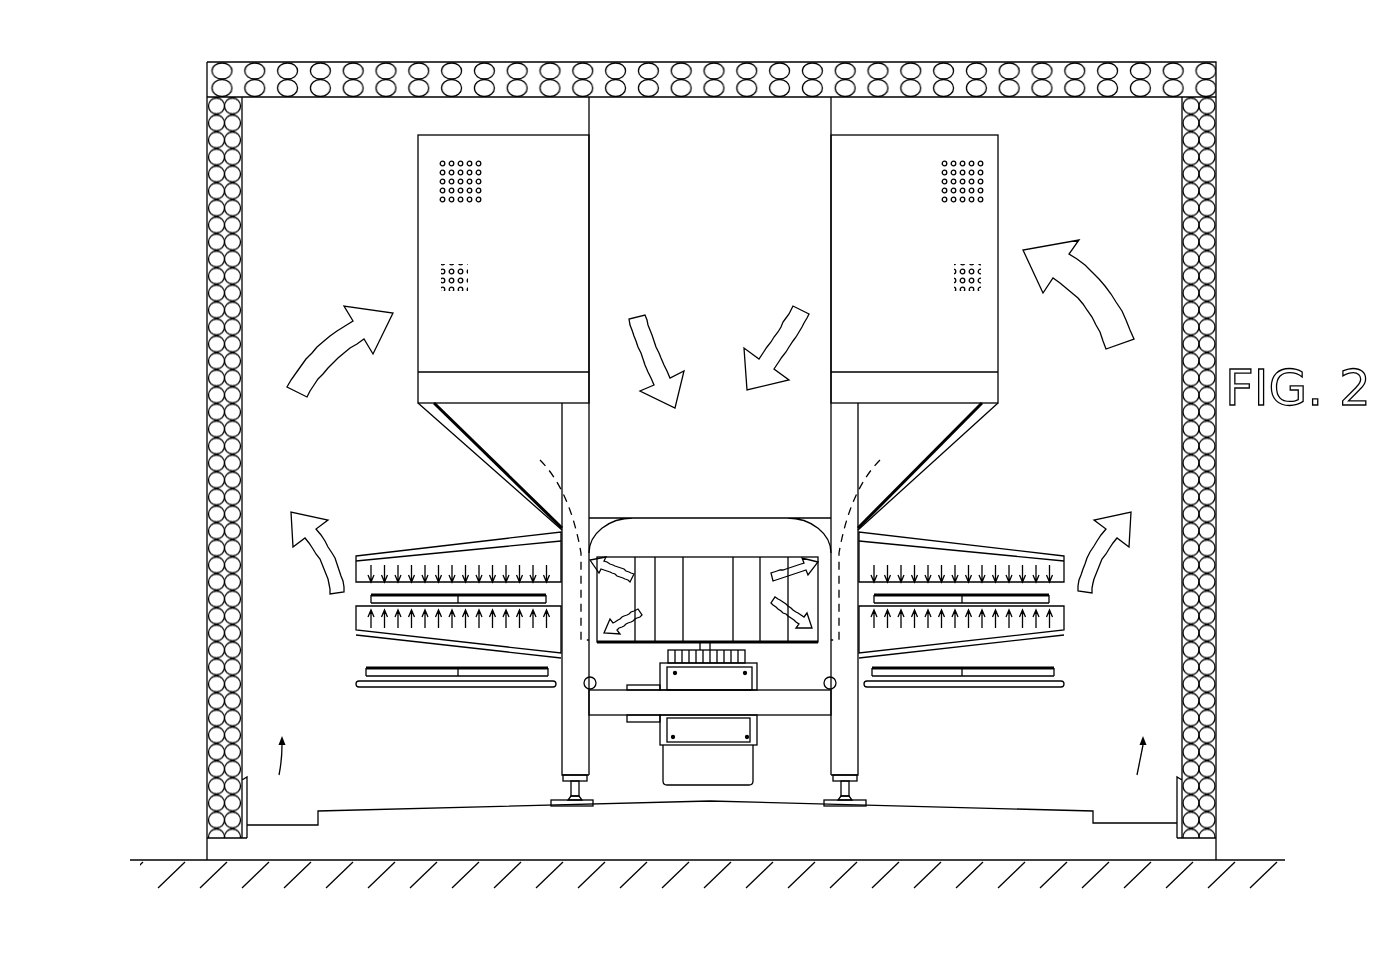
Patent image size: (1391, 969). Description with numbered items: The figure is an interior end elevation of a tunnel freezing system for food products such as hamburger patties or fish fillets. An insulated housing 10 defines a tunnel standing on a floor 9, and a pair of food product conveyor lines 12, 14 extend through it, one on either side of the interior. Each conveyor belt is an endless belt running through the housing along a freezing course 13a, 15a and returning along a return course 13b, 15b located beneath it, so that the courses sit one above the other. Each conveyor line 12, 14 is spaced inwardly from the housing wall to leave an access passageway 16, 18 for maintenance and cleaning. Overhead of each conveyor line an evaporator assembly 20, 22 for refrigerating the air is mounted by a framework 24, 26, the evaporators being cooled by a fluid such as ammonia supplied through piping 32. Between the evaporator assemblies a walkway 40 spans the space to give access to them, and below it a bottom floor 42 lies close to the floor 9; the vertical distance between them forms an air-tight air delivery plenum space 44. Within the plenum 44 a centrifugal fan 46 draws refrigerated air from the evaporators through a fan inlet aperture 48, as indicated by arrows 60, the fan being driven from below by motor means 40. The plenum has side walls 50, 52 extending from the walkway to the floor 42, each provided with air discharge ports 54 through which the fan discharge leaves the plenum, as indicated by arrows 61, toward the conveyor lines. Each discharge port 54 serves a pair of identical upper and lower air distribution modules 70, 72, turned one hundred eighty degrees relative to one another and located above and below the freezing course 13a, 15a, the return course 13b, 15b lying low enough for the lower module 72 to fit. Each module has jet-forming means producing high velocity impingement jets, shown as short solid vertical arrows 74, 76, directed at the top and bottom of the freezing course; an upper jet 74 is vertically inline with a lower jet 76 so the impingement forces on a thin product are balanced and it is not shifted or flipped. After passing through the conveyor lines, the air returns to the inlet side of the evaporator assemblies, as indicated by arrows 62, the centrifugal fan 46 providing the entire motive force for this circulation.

The floor 9 is at (972, 808).
The insulated housing 10 is at (200, 174).
The conveyor line 12 is at (320, 638).
The freezing course 13a is at (352, 556).
The return course 13b is at (358, 686).
The conveyor line 14 is at (1110, 638).
The freezing course 15a is at (1050, 593).
The return course 15b is at (1048, 668).
The access passageway 16 is at (275, 769).
The access passageway 18 is at (1137, 769).
The evaporator assembly 20 is at (364, 146).
The evaporator assembly 22 is at (1036, 150).
The framework 24 is at (590, 112).
The framework 26 is at (831, 112).
The piping 32 is at (537, 205).
The walkway 40 is at (657, 517).
The bottom floor 42 is at (790, 690).
The air delivery plenum space 44 is at (647, 672).
The centrifugal fan 46 is at (720, 599).
The fan inlet aperture 48 is at (716, 520).
The side wall 50 is at (589, 684).
The side wall 52 is at (833, 684).
The air discharge port 54 is at (707, 537).
The arrows 60 is at (743, 352).
The arrows 61 is at (637, 610).
The arrows 62 is at (347, 355).
The upper module 70 is at (437, 540).
The lower module 72 is at (358, 647).
The upper jet 74 is at (466, 582).
The lower jet 76 is at (485, 625).